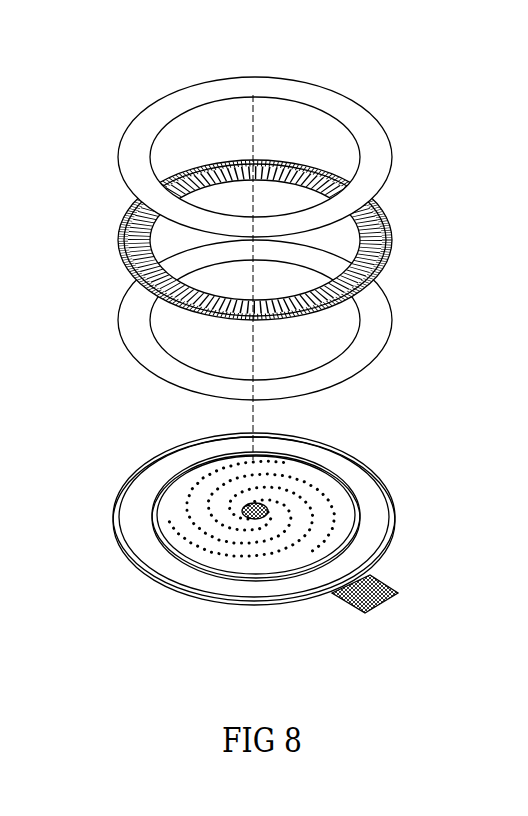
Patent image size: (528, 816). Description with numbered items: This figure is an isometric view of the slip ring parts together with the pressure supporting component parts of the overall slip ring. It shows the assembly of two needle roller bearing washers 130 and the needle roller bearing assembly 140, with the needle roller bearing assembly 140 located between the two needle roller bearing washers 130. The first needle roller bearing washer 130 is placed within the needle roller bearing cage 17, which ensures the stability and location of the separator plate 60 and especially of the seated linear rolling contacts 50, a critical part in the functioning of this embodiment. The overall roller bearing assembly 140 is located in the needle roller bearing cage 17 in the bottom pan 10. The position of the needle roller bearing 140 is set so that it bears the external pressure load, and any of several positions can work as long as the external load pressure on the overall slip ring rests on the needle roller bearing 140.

The bottom pan 10 is at (397, 532).
The needle roller bearing cage 17 is at (372, 493).
The seated linear rolling contacts 50 is at (165, 535).
The separator plate 60 is at (163, 495).
The needle roller bearing washer 130 is at (373, 112).
The needle roller bearing assembly 140 is at (395, 223).